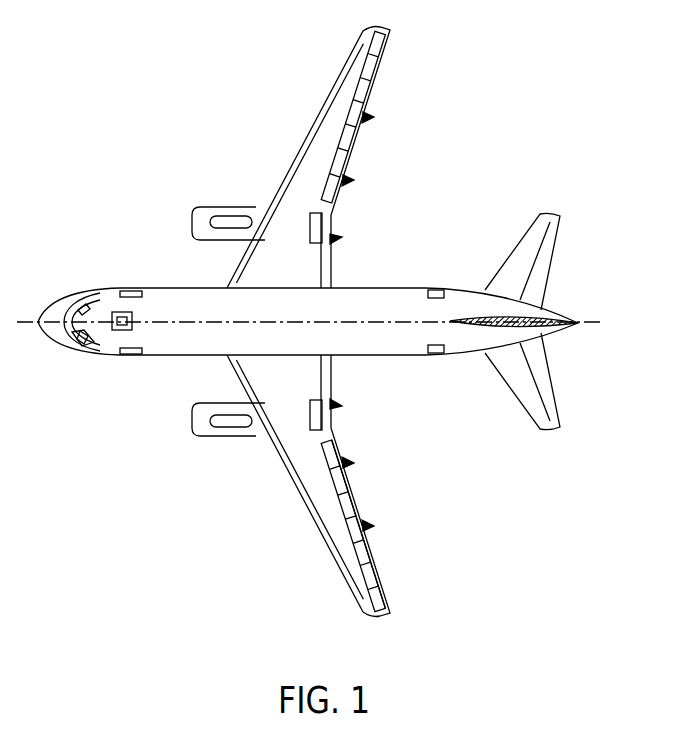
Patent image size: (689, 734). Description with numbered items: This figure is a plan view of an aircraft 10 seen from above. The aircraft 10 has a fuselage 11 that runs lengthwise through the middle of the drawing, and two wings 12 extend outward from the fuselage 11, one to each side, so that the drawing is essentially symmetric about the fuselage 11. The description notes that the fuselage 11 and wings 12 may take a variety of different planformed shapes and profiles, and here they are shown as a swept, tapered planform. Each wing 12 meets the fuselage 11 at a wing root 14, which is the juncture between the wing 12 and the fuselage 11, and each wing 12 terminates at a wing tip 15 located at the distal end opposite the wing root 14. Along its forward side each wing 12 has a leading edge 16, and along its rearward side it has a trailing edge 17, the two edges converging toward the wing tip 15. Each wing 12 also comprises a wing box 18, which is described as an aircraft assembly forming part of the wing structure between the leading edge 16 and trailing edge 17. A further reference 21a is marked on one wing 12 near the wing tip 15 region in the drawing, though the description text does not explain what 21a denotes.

The aircraft 10 is at (513, 123).
The fuselage 11 is at (391, 298).
The wing 12 is at (300, 150).
The wing root 14 is at (265, 363).
The wing tip 15 is at (365, 612).
The leading edge 16 is at (298, 497).
The trailing edge 17 is at (331, 447).
The wing box 18 is at (343, 502).
The aileron 21a is at (333, 117).